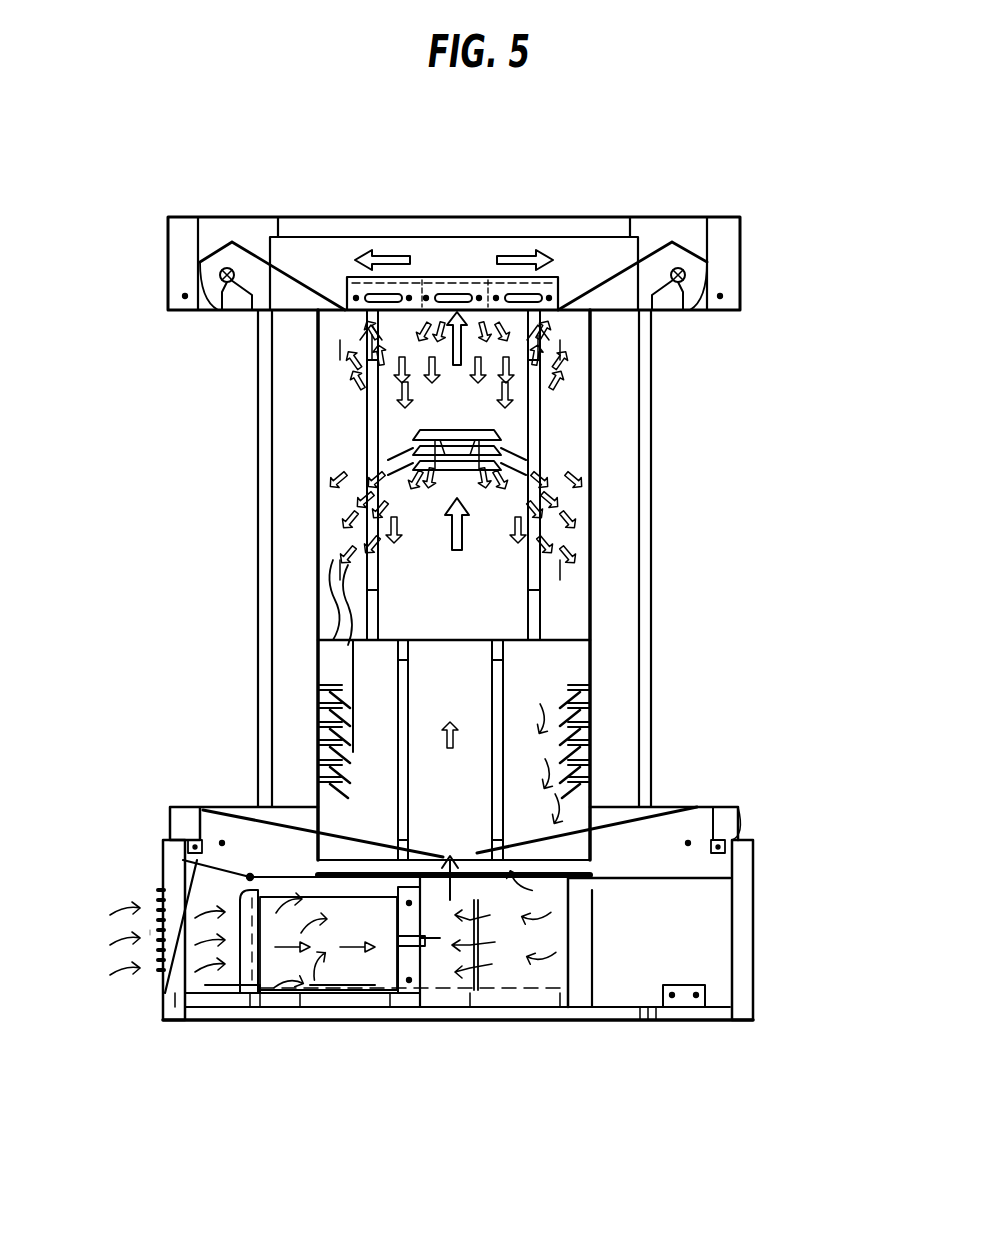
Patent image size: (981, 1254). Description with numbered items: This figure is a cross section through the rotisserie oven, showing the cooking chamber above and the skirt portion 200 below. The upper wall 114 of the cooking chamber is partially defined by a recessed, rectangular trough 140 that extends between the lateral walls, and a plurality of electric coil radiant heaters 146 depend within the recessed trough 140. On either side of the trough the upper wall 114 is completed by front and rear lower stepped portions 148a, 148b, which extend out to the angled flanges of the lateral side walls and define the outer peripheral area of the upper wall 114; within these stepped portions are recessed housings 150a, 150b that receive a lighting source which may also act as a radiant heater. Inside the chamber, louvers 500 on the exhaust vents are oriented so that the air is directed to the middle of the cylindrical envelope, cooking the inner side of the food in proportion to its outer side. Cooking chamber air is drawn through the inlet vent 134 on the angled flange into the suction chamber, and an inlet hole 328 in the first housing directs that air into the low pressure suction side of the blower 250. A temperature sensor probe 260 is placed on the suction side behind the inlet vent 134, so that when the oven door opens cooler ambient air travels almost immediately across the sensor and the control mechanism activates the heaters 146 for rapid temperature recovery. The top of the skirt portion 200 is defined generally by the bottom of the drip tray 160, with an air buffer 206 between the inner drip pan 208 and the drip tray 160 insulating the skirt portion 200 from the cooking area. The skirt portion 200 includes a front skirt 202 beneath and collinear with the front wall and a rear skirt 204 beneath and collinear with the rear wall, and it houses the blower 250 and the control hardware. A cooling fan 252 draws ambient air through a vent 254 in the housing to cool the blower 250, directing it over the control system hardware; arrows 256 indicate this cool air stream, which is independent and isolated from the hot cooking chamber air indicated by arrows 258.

The upper wall 114 is at (600, 340).
The recessed rectangular trough 140 is at (450, 296).
The electric coil radiant heaters 146 is at (400, 296).
The front lower stepped portion 148a is at (300, 318).
The rear lower stepped portion 148b is at (623, 313).
The recessed housing 150a is at (207, 268).
The recessed housing 150b is at (680, 260).
The louvers 500 is at (500, 448).
The temperature sensor probe 260 is at (350, 670).
The inlet vent 134 is at (318, 727).
The drip tray 160 is at (303, 810).
The arrows indicating hot air 258 is at (562, 773).
The air buffer 206 is at (672, 865).
The front skirt 202 is at (165, 847).
The rear skirt 204 is at (740, 862).
The inner drip pan 208 is at (700, 843).
The inlet hole 328 is at (585, 905).
The blower 250 is at (418, 1025).
The cooling fan 252 is at (245, 955).
The vent 254 is at (150, 948).
The arrows indicating cool air stream 256 is at (200, 965).
The skirt portion 200 is at (88, 1020).